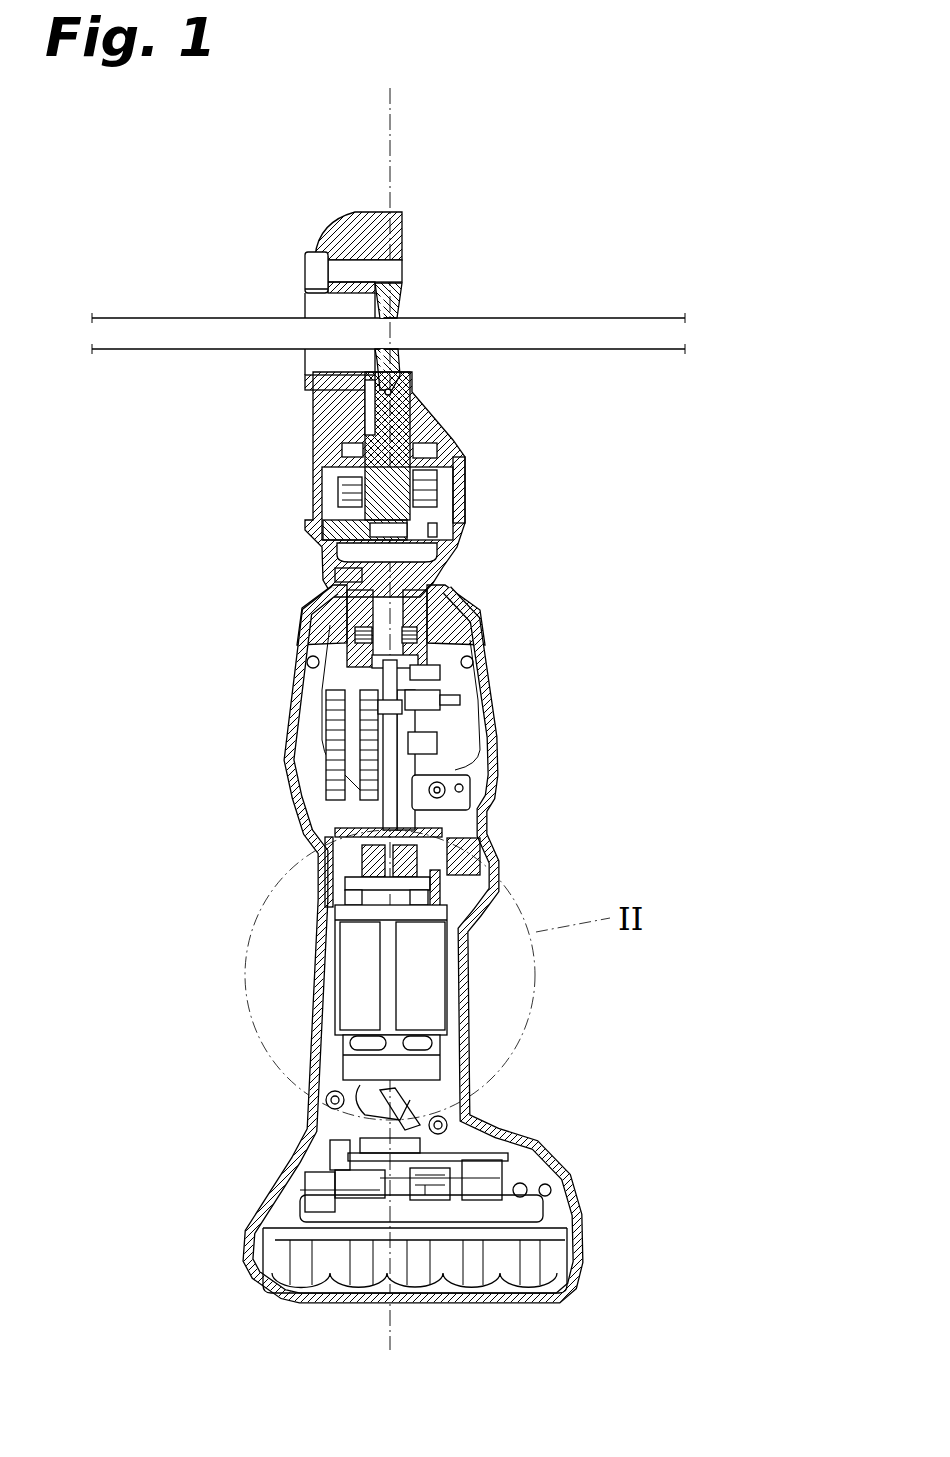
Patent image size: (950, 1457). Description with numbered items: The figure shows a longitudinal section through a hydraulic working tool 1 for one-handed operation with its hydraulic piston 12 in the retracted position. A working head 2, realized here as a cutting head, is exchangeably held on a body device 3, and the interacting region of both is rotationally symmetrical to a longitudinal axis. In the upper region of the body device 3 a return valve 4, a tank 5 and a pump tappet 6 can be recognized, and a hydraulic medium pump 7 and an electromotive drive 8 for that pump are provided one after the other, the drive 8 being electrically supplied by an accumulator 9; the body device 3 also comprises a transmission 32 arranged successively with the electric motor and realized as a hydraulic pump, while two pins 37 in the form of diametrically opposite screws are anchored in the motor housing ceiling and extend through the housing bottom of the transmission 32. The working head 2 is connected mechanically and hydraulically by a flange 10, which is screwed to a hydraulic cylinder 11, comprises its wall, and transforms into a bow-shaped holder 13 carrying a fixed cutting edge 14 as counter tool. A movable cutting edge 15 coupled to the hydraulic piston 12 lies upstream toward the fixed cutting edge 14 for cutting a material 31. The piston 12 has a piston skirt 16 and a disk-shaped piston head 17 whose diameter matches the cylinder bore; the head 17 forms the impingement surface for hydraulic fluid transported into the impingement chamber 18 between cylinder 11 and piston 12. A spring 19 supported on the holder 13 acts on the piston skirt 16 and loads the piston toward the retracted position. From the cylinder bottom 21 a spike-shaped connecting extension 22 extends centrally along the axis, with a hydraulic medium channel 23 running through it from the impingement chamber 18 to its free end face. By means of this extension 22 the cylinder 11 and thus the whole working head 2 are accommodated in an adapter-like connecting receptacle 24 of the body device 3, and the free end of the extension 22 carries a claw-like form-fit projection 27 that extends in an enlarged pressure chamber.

The hydraulic working tool 1 is at (200, 1162).
The working head 2 is at (237, 243).
The body device 3 is at (512, 793).
The return valve 4 is at (330, 722).
The tank 5 is at (313, 732).
The pump tappet 6 is at (390, 758).
The hydraulic medium pump 7 is at (338, 836).
The drive 8 is at (397, 985).
The accumulator 9 is at (497, 1262).
The flange 10 is at (465, 484).
The hydraulic cylinder 11 is at (447, 527).
The hydraulic piston 12 is at (352, 525).
The holder 13 is at (330, 411).
The fixed cutting edge 14 is at (398, 300).
The movable cutting edge 15 is at (382, 370).
The piston skirt 16 is at (345, 450).
The piston head 17 is at (415, 532).
The impingement chamber 18 is at (360, 550).
The spring 19 is at (428, 461).
The cylinder bottom 21 is at (345, 575).
The connecting extension 22 is at (405, 605).
The hydraulic medium channel 23 is at (420, 668).
The connecting receptacle 24 is at (360, 605).
The form-fit projection 27 is at (405, 655).
The material to be cut 31 is at (627, 337).
The transmission 32 is at (352, 860).
The pins 37 is at (352, 902).